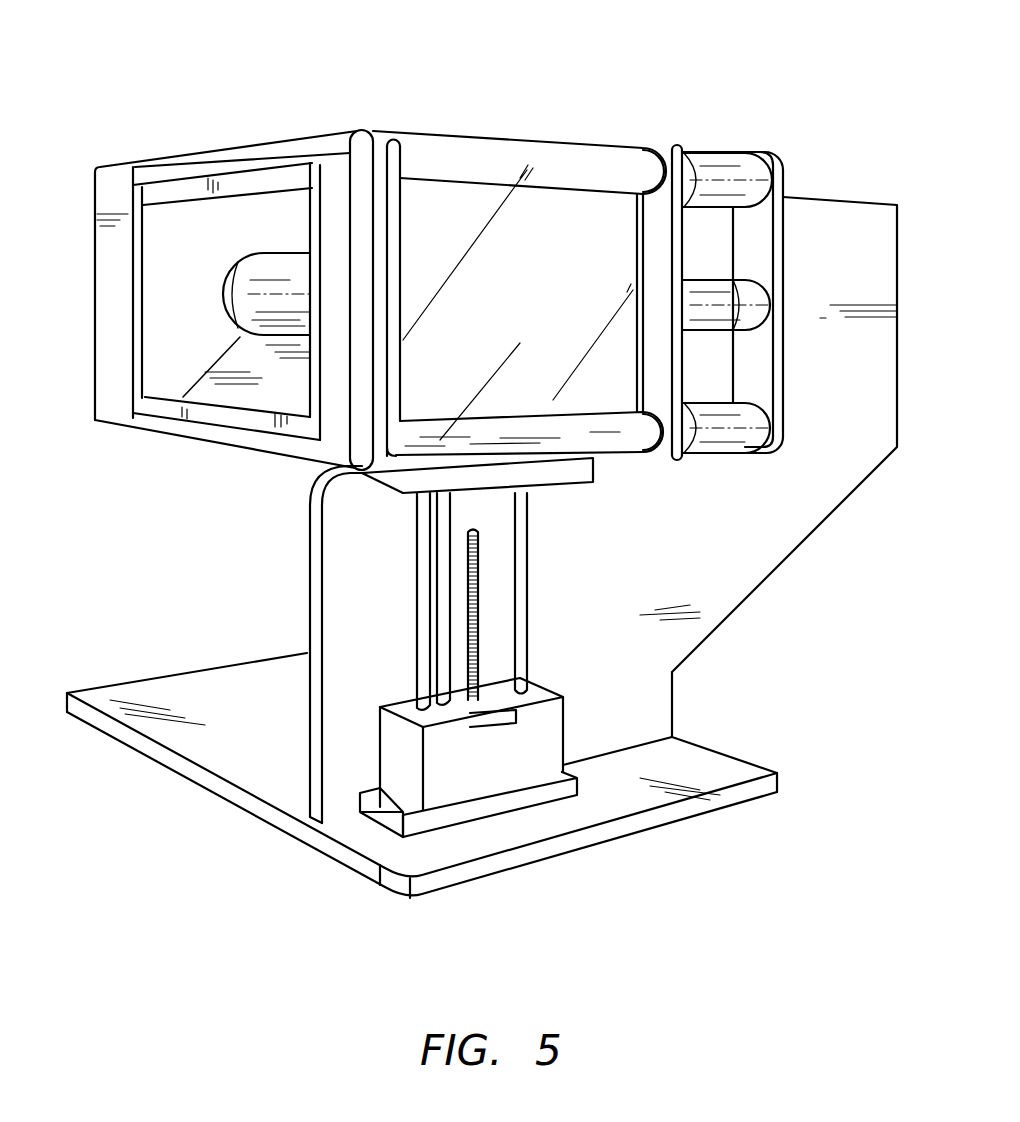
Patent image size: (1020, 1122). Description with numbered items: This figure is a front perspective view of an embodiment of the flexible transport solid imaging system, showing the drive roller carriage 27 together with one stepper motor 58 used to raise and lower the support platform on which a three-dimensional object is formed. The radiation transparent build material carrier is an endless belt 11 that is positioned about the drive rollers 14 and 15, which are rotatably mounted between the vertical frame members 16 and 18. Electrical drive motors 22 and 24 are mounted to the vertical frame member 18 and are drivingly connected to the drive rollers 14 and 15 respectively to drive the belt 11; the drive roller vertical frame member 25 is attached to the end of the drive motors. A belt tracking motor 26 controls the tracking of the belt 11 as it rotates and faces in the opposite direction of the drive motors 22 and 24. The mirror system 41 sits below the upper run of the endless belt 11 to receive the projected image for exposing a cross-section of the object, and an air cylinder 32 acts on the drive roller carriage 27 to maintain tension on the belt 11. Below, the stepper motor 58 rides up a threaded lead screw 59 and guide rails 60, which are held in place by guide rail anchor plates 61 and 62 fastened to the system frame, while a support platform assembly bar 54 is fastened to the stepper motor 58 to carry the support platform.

The endless belt 11 is at (268, 146).
The drive roller 14 is at (647, 153).
The drive roller 15 is at (645, 440).
The vertical frame member 16 is at (357, 133).
The vertical frame member 18 is at (665, 147).
The drive motor 22 is at (727, 167).
The drive motor 24 is at (732, 432).
The drive roller vertical frame member 25 is at (783, 363).
The belt tracking motor 26 is at (720, 292).
The drive roller carriage 27 is at (797, 462).
The air cylinder 32 is at (240, 307).
The mirror system 41 is at (240, 365).
The support platform assembly bar 54 is at (503, 727).
The stepper motor 58 is at (465, 775).
The threaded lead screw 59 is at (487, 613).
The guide rails 60 is at (417, 607).
The guide rail anchor plate 61 is at (377, 813).
The guide rail anchor plate 62 is at (390, 493).